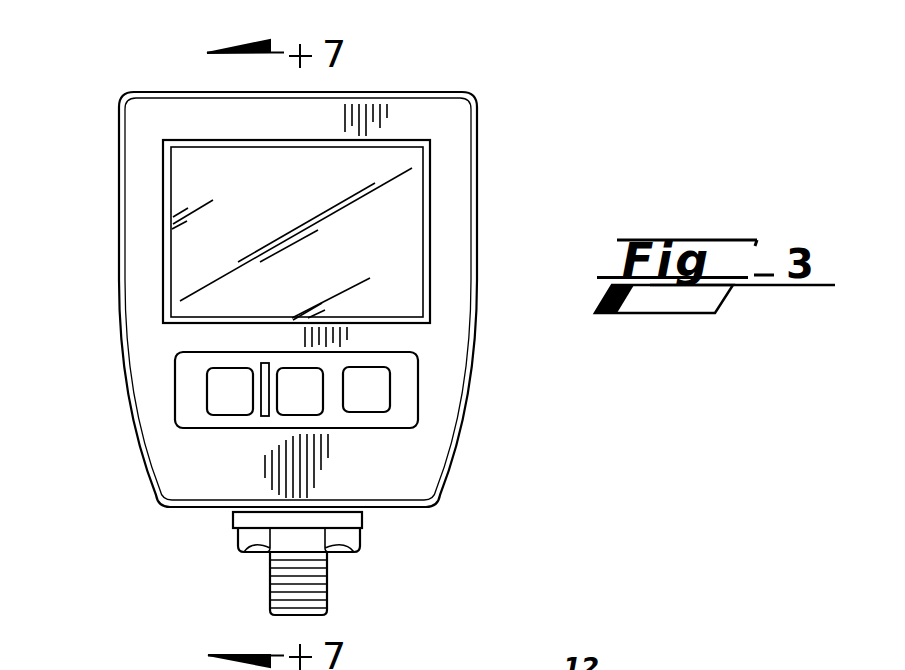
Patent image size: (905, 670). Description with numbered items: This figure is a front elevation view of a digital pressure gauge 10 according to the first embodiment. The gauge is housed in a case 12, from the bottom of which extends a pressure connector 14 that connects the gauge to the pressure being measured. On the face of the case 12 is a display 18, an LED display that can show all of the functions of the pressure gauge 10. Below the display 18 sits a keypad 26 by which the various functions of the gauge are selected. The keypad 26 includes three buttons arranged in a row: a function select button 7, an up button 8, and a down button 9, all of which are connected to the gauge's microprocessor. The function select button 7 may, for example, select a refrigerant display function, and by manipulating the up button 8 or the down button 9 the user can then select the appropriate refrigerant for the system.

The digital pressure gauge 10 is at (170, 66).
The case 12 is at (460, 90).
The display 18 is at (382, 228).
The keypad 26 is at (409, 391).
The function select button 7 is at (220, 387).
The up button 8 is at (283, 405).
The down button 9 is at (371, 400).
The pressure connector 14 is at (270, 585).